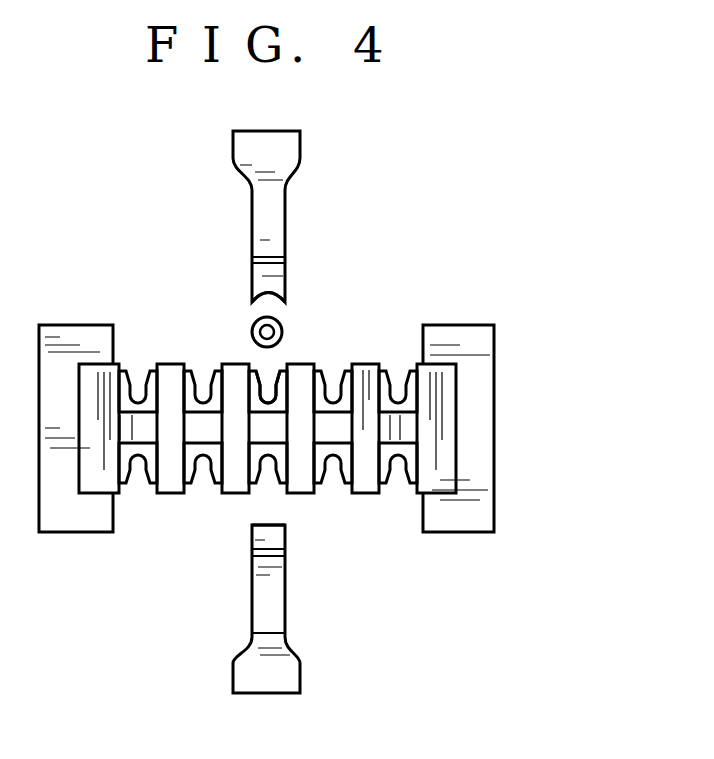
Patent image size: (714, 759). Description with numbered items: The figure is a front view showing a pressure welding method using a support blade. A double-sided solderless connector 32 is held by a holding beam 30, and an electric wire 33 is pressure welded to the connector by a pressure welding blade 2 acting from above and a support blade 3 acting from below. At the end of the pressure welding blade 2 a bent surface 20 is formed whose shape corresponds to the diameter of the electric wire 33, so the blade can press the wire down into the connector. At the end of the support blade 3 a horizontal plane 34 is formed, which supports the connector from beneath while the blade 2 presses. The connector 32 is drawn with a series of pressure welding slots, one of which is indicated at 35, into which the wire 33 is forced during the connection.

The pressure welding blade 2 is at (275, 235).
The support blade 3 is at (273, 590).
The bent surface 20 is at (266, 296).
The holding beam 30 is at (494, 497).
The double-sided solderless connector 32 is at (366, 362).
The electric wire 33 is at (252, 334).
The horizontal plane 34 is at (263, 525).
The notch of lead frame 35 is at (272, 377).